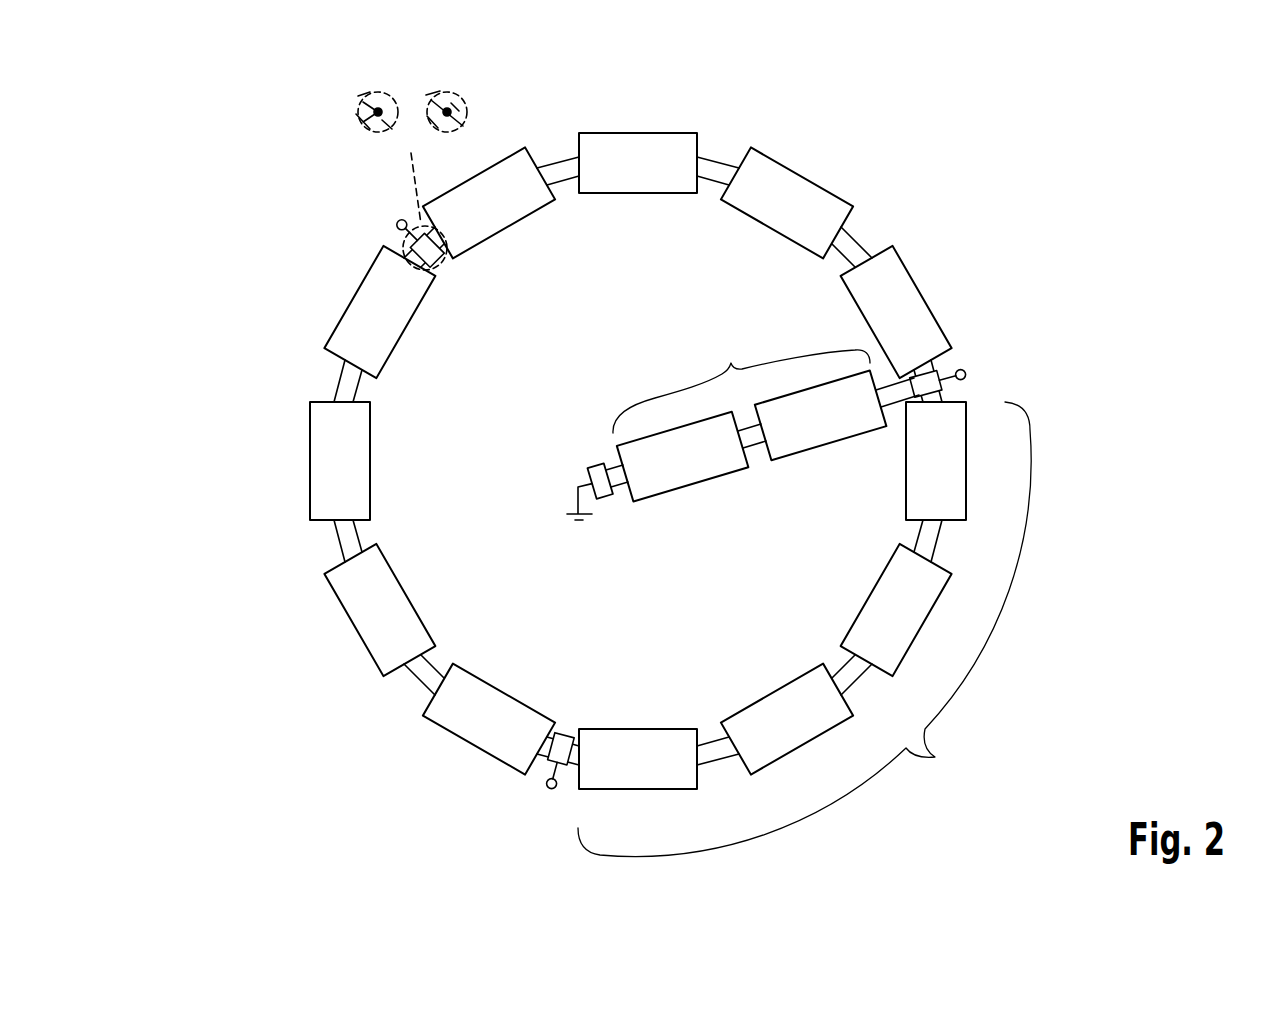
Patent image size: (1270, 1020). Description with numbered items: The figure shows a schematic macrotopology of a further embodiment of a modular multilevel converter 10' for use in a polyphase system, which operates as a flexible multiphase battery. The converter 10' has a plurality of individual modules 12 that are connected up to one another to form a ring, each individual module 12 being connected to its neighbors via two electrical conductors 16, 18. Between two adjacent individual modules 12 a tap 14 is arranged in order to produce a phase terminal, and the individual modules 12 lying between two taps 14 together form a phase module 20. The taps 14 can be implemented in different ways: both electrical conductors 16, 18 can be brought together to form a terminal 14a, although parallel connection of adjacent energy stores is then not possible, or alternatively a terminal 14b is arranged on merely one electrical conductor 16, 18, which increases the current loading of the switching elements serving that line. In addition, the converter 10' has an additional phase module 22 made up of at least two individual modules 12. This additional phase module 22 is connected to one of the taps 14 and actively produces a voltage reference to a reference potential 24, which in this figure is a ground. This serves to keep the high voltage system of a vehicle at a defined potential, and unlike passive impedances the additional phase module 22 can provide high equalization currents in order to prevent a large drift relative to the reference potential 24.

The modular multilevel converter 10' is at (535, 426).
The individual module 12 is at (360, 315).
The tap 14 is at (442, 265).
The terminal 14a is at (372, 98).
The terminal 14b is at (452, 100).
The electrical conductor 16 is at (704, 156).
The electrical conductor 18 is at (720, 177).
The phase module 20 is at (804, 629).
The additional phase module 22 is at (766, 417).
The reference potential 24 is at (578, 503).